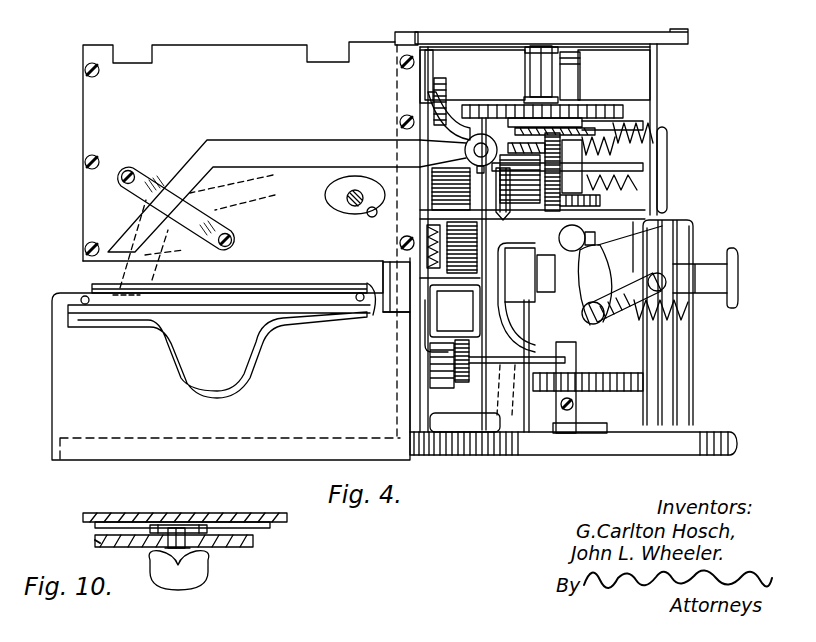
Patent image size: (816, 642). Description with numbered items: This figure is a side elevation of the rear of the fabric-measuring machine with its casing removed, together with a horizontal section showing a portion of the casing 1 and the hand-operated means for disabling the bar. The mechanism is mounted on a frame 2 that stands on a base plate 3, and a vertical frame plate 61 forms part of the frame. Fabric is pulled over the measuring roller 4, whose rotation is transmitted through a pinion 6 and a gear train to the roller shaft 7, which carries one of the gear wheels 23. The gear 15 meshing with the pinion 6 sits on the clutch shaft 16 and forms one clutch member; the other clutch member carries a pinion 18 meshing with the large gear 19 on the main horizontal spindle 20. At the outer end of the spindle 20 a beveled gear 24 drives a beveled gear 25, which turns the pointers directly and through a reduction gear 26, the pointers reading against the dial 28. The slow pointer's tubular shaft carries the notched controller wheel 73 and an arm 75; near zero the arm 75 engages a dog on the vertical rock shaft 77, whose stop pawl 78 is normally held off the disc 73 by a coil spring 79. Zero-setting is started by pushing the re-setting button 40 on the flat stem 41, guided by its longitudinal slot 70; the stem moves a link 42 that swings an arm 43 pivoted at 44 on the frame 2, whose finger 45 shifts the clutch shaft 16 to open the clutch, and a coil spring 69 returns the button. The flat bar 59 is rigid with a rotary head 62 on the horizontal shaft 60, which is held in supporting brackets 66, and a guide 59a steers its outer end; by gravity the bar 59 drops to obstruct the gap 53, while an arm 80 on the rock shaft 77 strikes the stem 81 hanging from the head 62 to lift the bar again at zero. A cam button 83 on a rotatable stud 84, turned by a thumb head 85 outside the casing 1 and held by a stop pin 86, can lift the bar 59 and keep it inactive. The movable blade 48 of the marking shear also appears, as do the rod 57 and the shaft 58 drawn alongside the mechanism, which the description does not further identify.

In FIG. 4, the frame 2 is at (82, 124).
In FIG. 10, the frame 2 is at (113, 513).
In FIG. 4, the vertical frame plate 61 is at (411, 33).
In FIG. 4, the gear wheels 23 is at (414, 86).
In FIG. 4, the dial 28 is at (588, 30).
In FIG. 4, the rod 57 is at (663, 111).
In FIG. 4, the base plate 3 is at (528, 450).
In FIG. 4, the arm 80 is at (526, 356).
In FIG. 4, the stem 81 is at (483, 366).
In FIG. 4, the roller shaft 7 is at (436, 100).
In FIG. 4, the arm 75 is at (533, 100).
In FIG. 4, the controller wheel 73 is at (572, 140).
In FIG. 4, the beveled gear 24 is at (490, 130).
In FIG. 4, the beveled gear 25 is at (579, 113).
In FIG. 4, the reduction gear 26 is at (626, 108).
In FIG. 4, the large gear 19 is at (456, 120).
In FIG. 4, the clutch shaft 16 is at (621, 222).
In FIG. 4, the shaft 58 is at (657, 175).
In FIG. 4, the coil spring 79 is at (647, 138).
In FIG. 4, the stop pawl 78 is at (632, 146).
In FIG. 4, the arm 43 is at (662, 228).
In FIG. 4, the supporting bracket 66 is at (466, 133).
In FIG. 4, the horizontal shaft 60 is at (465, 152).
In FIG. 4, the bar 59 is at (258, 151).
In FIG. 10, the bar 59 is at (255, 526).
In FIG. 4, the guide 59a is at (150, 178).
In FIG. 4, the button or cam 83 is at (326, 188).
In FIG. 10, the button or cam 83 is at (222, 518).
In FIG. 4, the rotatable stud 84 is at (346, 206).
In FIG. 10, the rotatable stud 84 is at (175, 530).
In FIG. 4, the stop pin 86 is at (368, 216).
In FIG. 10, the stop pin 86 is at (200, 548).
In FIG. 4, the rotary head 62 is at (381, 192).
In FIG. 4, the main horizontal spindle 20 is at (415, 231).
In FIG. 4, the gear 15 is at (404, 237).
In FIG. 4, the pinion 18 is at (430, 272).
In FIG. 4, the pinion 6 is at (473, 381).
In FIG. 4, the finger 45 is at (545, 348).
In FIG. 4, the vertical rock shaft 77 is at (588, 344).
In FIG. 4, the pivot 44 is at (593, 262).
In FIG. 4, the link 42 is at (605, 324).
In FIG. 4, the longitudinal slot 70 is at (630, 272).
In FIG. 4, the flat stem 41 is at (713, 262).
In FIG. 4, the re-setting button 40 is at (737, 283).
In FIG. 4, the coil spring 69 is at (663, 322).
In FIG. 4, the gap 53 is at (82, 274).
In FIG. 4, the measuring roller 4 is at (255, 289).
In FIG. 4, the movable blade 48 is at (378, 307).
In FIG. 10, the casing 1 is at (240, 548).
In FIG. 10, the thumb head 85 is at (165, 586).